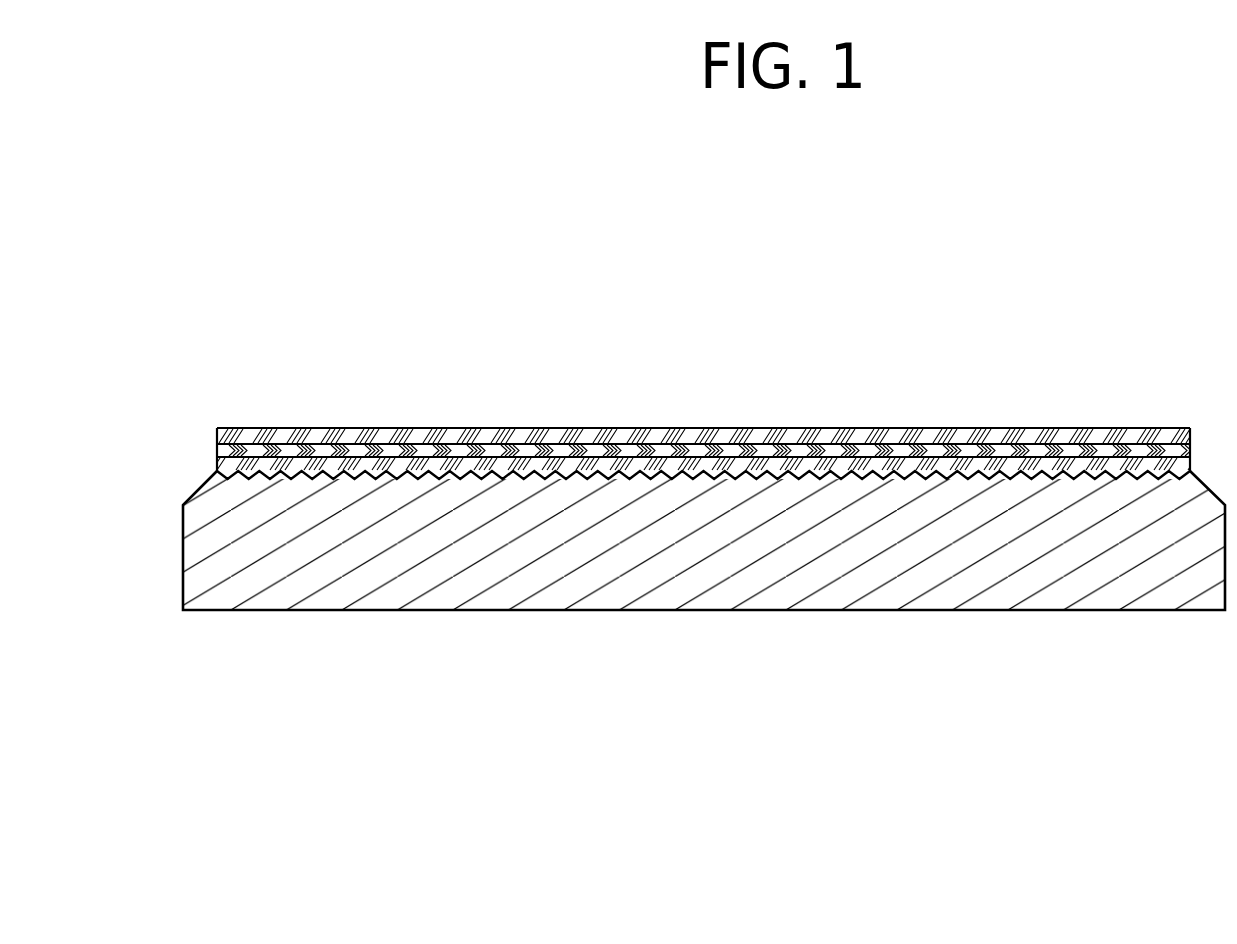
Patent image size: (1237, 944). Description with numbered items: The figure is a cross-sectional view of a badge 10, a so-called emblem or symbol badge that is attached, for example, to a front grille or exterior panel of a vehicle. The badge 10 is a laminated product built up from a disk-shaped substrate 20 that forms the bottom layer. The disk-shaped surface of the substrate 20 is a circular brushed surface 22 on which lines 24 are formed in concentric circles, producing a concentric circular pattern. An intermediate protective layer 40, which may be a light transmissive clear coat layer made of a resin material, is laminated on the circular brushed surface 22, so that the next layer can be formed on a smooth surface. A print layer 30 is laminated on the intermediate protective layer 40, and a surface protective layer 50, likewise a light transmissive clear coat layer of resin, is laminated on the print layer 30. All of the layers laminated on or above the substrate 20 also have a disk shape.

The badge 10 is at (222, 293).
The substrate 20 is at (730, 575).
The circular brushed surface 22 is at (392, 468).
The lines 24 is at (583, 457).
The print layer 30 is at (989, 445).
The intermediate protective layer 40 is at (703, 404).
The surface protective layer 50 is at (1110, 435).